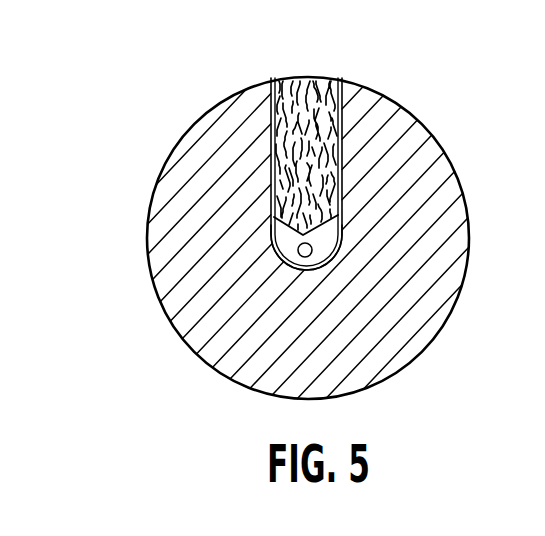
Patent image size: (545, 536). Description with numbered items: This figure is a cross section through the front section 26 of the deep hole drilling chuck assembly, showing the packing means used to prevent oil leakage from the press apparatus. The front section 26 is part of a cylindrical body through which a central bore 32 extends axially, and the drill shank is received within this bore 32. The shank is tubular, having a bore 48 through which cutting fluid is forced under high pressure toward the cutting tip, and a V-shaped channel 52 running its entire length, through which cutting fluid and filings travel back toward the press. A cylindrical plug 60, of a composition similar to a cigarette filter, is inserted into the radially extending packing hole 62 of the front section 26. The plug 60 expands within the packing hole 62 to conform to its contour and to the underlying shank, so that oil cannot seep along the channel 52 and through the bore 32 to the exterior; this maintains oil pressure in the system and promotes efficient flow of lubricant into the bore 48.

The front section 26 is at (466, 270).
The central bore 32 is at (343, 203).
The bore 48 is at (298, 251).
The V-shaped channel 52 is at (343, 240).
The cylindrical plug 60 is at (312, 88).
The packing hole 62 is at (343, 145).